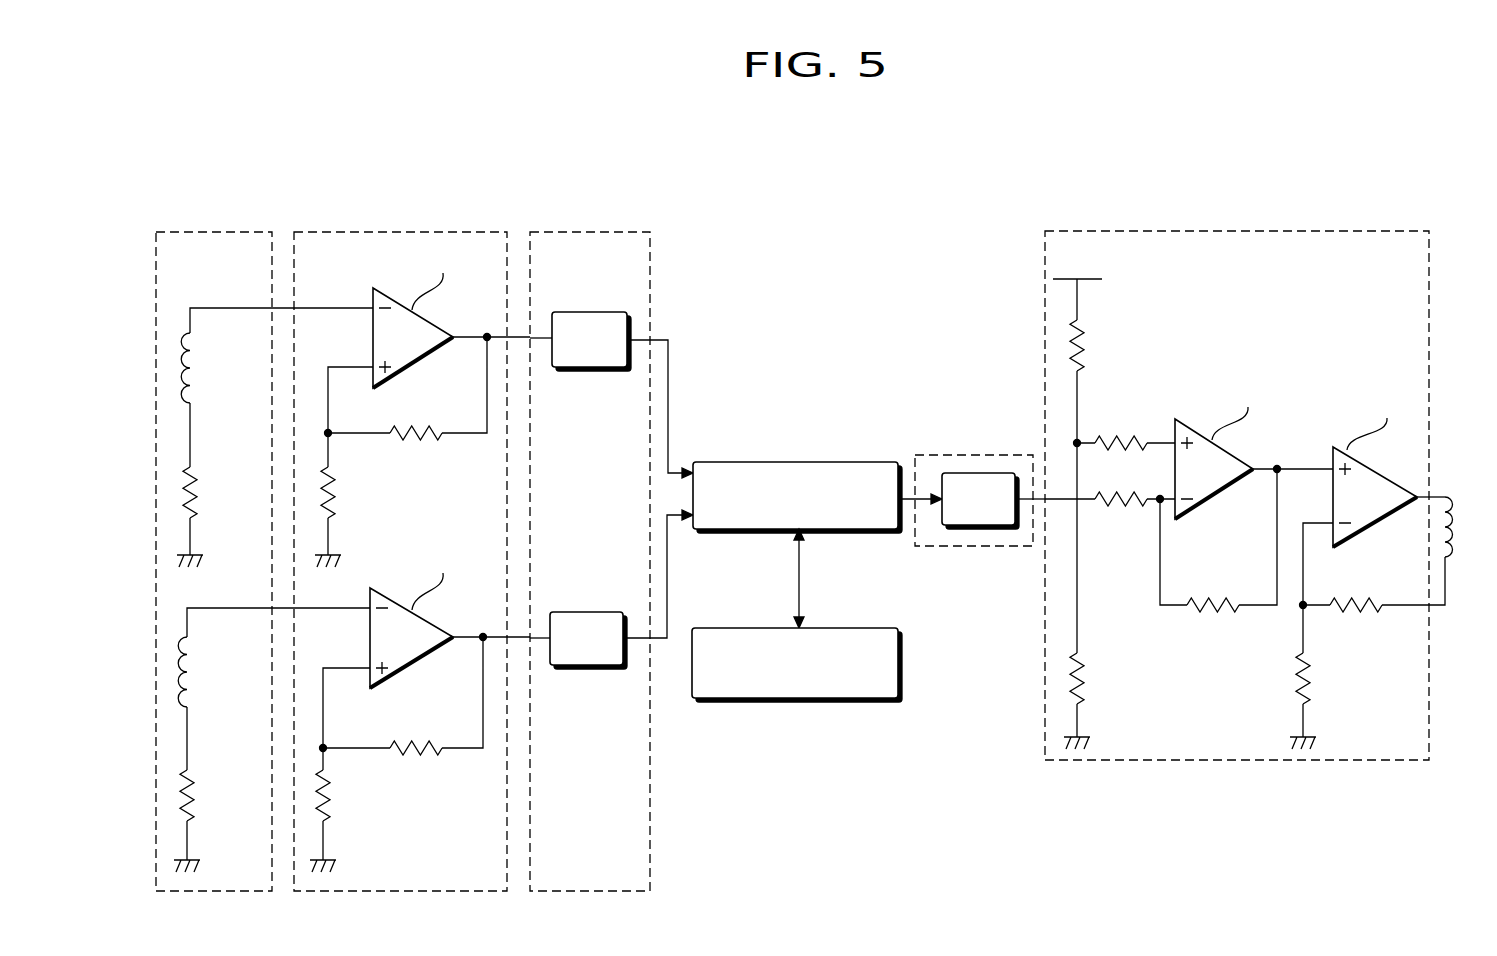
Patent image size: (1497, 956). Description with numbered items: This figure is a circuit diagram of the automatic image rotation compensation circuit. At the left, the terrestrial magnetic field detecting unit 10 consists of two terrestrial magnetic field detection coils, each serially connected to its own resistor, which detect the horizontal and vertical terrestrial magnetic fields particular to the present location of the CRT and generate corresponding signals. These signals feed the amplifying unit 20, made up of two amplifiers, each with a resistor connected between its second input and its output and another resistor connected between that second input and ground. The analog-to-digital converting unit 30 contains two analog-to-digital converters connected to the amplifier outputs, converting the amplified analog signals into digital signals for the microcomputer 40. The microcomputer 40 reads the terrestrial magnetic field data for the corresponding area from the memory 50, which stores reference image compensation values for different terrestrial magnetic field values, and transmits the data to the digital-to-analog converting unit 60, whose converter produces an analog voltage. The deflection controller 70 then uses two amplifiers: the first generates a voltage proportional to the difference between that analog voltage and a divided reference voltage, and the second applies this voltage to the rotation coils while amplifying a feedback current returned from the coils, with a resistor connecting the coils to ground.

The terrestrial magnetic field detecting unit 10 is at (210, 231).
The amplifying unit 20 is at (393, 231).
The analog-to-digital converting unit 30 is at (582, 231).
The microcomputer 40 is at (802, 462).
The memory 50 is at (800, 699).
The digital-to-analog converting unit 60 is at (975, 455).
The deflection controller 70 is at (1218, 231).